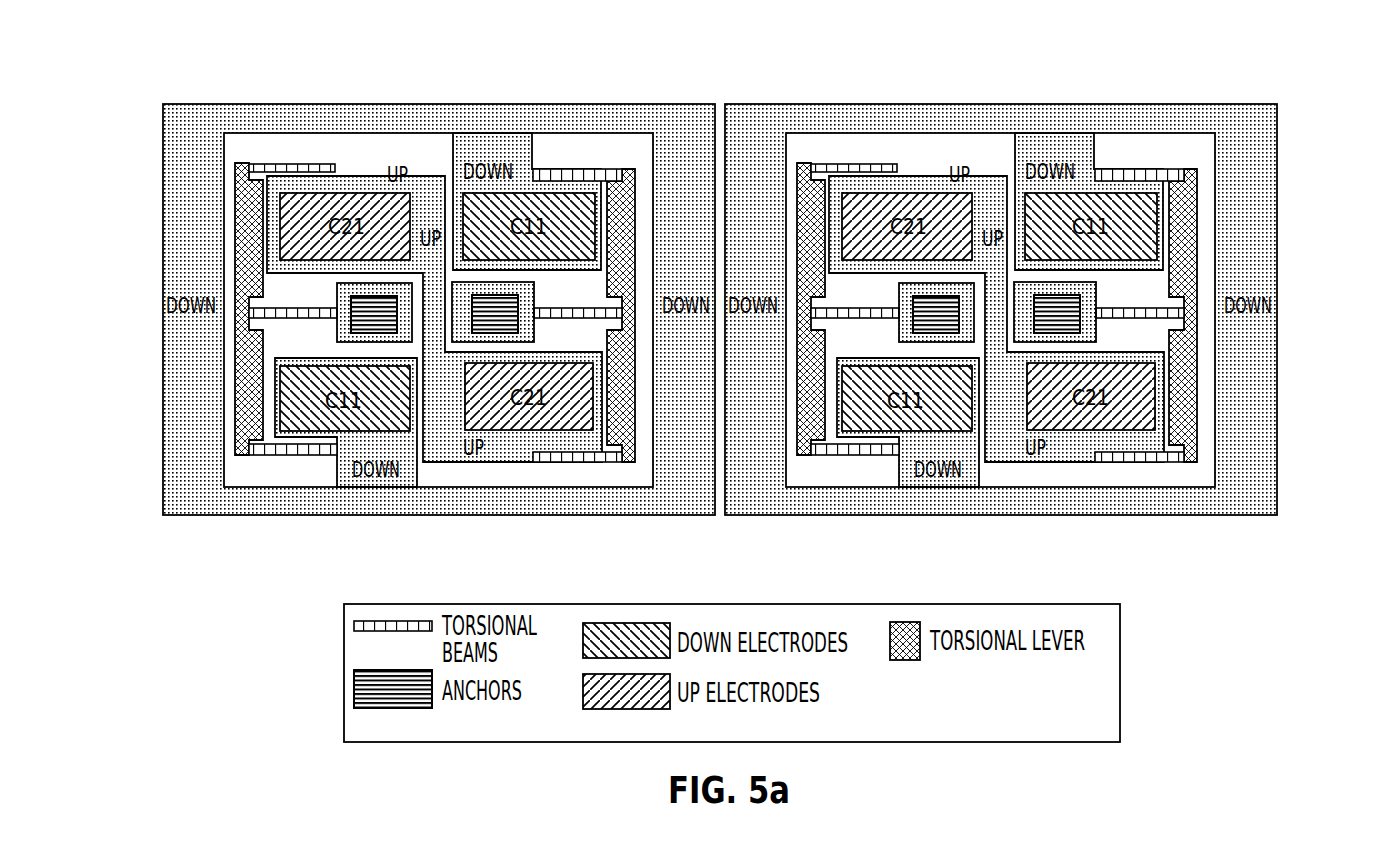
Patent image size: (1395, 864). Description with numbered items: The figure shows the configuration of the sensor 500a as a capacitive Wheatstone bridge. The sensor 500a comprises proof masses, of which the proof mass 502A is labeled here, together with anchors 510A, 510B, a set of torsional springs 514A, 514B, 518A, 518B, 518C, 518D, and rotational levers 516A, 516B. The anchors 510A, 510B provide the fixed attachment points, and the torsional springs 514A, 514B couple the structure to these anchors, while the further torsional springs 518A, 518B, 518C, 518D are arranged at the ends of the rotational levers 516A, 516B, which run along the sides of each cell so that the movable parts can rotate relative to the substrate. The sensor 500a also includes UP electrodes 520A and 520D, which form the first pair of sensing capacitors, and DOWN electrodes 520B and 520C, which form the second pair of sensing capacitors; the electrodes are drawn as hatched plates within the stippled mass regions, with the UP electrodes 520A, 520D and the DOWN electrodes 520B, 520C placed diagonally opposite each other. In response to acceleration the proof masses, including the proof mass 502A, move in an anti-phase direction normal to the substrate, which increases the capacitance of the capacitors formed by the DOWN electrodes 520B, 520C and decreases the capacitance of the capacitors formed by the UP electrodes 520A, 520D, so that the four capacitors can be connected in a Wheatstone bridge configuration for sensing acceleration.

The sensor 500a is at (1217, 82).
The proof mass 502A is at (170, 240).
The anchor 510A is at (342, 300).
The anchor 510B is at (527, 300).
The torsional spring 514A is at (250, 313).
The torsional spring 514B is at (618, 313).
The rotational lever 516A is at (245, 402).
The rotational lever 516B is at (630, 458).
The torsional spring 518A is at (297, 166).
The torsional spring 518B is at (580, 175).
The torsional spring 518C is at (292, 452).
The torsional spring 518D is at (572, 459).
The UP electrode 520A is at (347, 197).
The DOWN electrode 520B is at (520, 198).
The DOWN electrode 520C is at (338, 370).
The UP electrode 520D is at (535, 368).